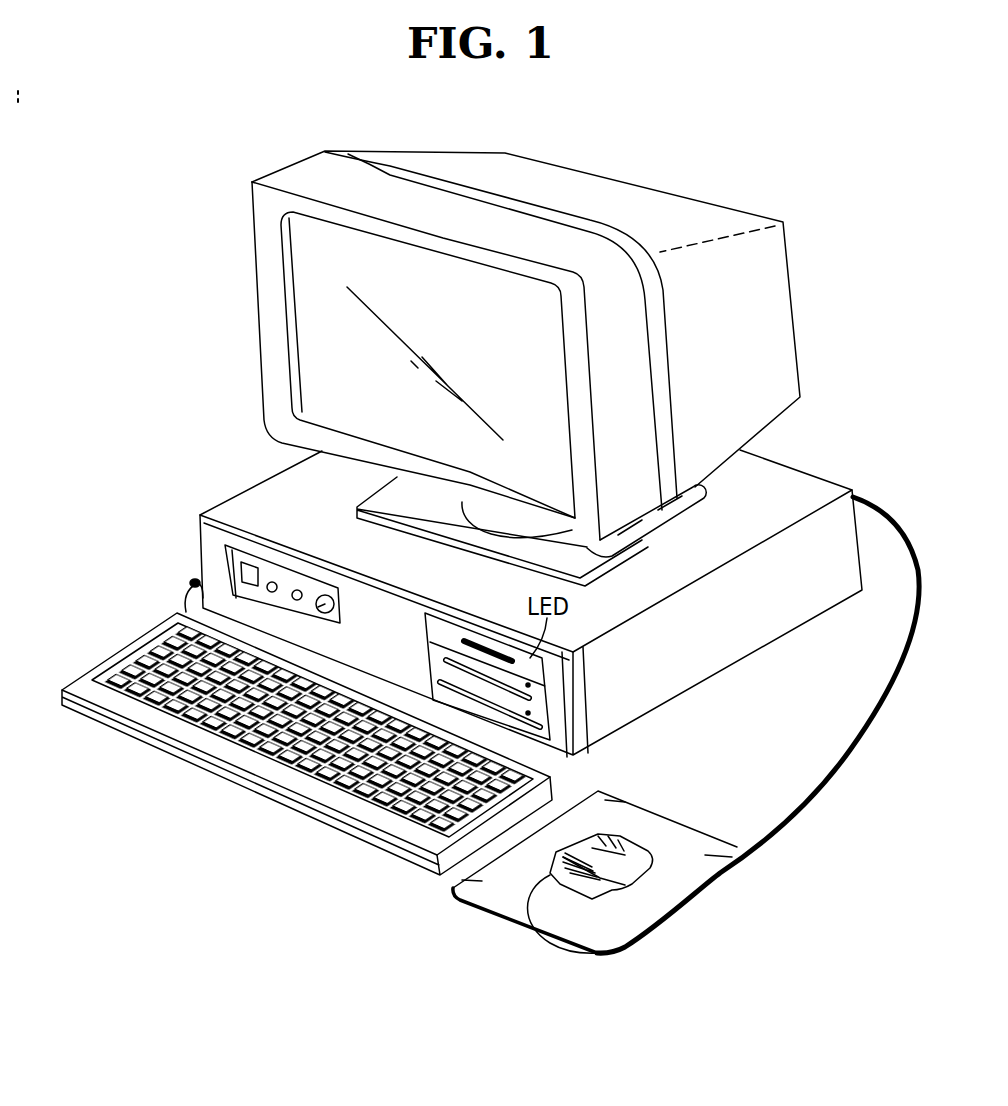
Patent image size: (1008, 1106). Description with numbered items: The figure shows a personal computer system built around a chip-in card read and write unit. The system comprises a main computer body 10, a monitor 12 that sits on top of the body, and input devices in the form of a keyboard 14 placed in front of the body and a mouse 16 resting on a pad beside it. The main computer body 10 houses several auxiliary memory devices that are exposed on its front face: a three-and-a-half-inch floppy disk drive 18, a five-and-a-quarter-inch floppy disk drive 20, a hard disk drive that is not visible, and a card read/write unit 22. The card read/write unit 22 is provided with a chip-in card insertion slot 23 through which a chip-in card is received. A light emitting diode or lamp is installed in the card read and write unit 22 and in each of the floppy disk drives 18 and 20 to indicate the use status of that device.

The main computer body 10 is at (206, 510).
The monitor 12 is at (246, 322).
The keyboard 14 is at (128, 640).
The mouse 16 is at (548, 877).
The 3.5" floppy disk drive 18 is at (543, 697).
The 5.25" floppy disk drive 20 is at (572, 757).
The card read/write unit 22 is at (538, 672).
The chip-in card insertion slot 23 is at (474, 645).